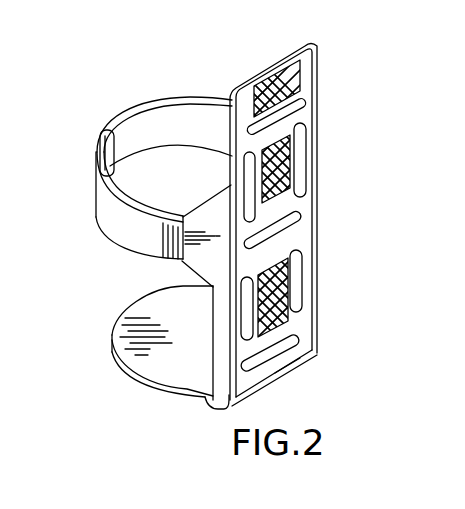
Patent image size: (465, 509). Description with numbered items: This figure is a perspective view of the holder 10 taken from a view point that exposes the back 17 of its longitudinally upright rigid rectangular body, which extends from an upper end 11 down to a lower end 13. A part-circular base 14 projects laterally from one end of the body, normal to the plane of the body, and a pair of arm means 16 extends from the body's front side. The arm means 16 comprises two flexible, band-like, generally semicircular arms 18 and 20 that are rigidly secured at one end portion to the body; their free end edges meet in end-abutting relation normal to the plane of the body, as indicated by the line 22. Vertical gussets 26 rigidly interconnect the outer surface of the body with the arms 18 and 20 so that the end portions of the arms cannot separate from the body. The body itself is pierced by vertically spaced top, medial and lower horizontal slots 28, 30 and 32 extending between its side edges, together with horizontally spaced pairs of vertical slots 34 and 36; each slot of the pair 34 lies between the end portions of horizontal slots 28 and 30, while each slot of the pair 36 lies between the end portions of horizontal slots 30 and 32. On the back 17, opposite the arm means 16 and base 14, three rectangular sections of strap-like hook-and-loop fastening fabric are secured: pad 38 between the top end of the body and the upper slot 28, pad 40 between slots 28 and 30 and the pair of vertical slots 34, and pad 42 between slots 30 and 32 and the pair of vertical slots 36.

The holder 10 is at (97, 82).
The upper end 11 is at (294, 43).
The lower end 13 is at (269, 381).
The base 14 is at (106, 339).
The arm means 16 is at (133, 162).
The back 17 is at (304, 237).
The arm 18 is at (99, 228).
The arm 20 is at (152, 97).
The line 22 is at (115, 154).
The vertical gussets 26 is at (202, 205).
The top horizontal slot 28 is at (306, 100).
The medial horizontal slot 30 is at (294, 213).
The lower horizontal slot 32 is at (296, 345).
The pair of vertical slots 34 is at (234, 158).
The pair of vertical slots 36 is at (241, 340).
The fastening fabric pad 38 is at (300, 80).
The fastening fabric pad 40 is at (287, 175).
The fastening fabric pad 42 is at (283, 298).